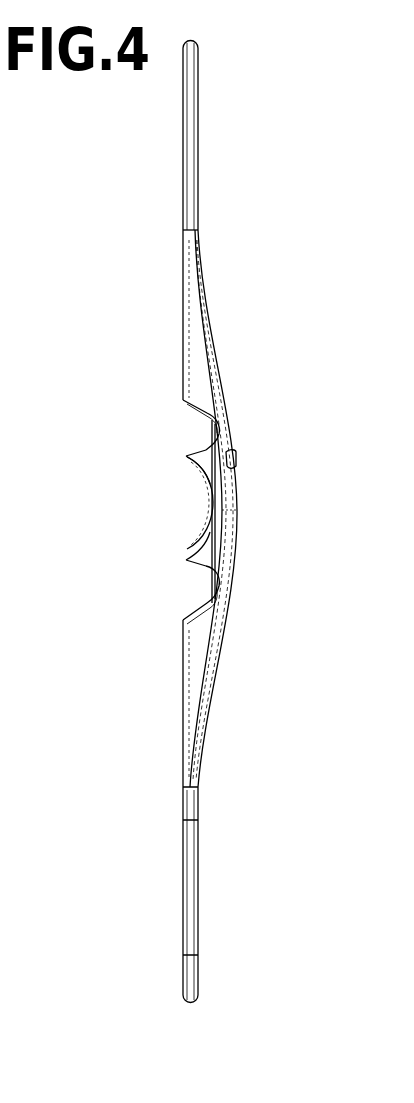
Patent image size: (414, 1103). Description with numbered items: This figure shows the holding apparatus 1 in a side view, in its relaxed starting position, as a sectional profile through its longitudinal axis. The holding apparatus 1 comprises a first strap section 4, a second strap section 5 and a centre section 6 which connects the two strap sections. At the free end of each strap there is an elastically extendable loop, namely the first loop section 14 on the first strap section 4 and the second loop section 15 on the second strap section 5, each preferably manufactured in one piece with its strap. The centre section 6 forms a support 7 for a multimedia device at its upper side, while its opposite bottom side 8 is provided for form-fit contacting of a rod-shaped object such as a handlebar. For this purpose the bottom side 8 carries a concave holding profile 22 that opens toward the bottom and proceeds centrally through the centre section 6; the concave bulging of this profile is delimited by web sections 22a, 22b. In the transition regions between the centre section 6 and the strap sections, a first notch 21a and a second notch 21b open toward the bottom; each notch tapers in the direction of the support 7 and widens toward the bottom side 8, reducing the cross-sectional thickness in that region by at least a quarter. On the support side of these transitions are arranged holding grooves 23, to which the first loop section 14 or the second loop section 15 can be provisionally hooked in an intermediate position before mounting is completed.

The holding apparatus 1 is at (250, 163).
The first strap section 4 is at (150, 813).
The second strap section 5 is at (143, 247).
The centre section 6 is at (152, 508).
The support 7 is at (233, 522).
The bottom side 8 is at (177, 487).
The first loop section 14 is at (175, 908).
The second loop section 15 is at (165, 147).
The first notch 21a is at (188, 588).
The second notch 21b is at (188, 432).
The concave holding profile 22 is at (200, 552).
The web section 22a is at (190, 455).
The web section 22b is at (190, 560).
The holding grooves 23 is at (232, 465).